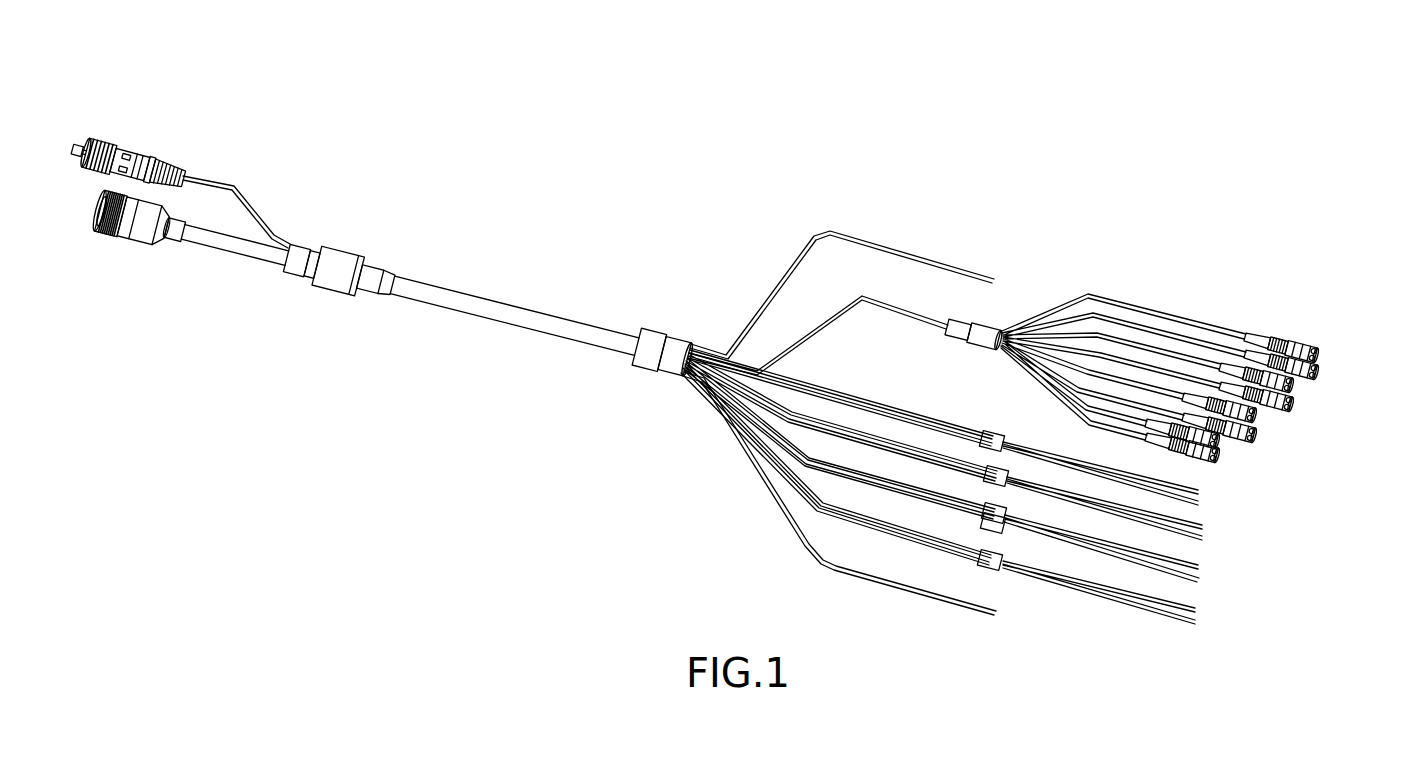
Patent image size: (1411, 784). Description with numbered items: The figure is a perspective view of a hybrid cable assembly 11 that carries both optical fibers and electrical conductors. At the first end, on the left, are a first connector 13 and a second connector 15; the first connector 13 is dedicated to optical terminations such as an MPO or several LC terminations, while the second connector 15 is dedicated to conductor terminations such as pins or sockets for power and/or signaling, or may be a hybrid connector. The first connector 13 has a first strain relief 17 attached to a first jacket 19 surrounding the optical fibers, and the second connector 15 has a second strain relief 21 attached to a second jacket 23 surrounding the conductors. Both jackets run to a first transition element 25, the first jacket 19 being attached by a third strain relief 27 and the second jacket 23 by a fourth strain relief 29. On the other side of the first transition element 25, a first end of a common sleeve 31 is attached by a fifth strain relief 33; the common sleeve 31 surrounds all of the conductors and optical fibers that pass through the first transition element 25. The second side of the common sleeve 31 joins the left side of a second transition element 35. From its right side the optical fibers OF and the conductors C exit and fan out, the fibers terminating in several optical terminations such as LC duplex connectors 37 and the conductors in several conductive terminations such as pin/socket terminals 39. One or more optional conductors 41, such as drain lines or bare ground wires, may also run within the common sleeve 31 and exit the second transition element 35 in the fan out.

The hybrid cable assembly 11 is at (572, 157).
The first connector 13 is at (139, 124).
The second connector 15 is at (124, 262).
The first strain relief 17 is at (168, 165).
The first jacket 19 is at (257, 210).
The second strain relief 21 is at (170, 232).
The second jacket 23 is at (232, 245).
The first transition element 25 is at (360, 225).
The third strain relief 27 is at (298, 242).
The fourth strain relief 29 is at (293, 262).
The common sleeve 31 is at (478, 312).
The fifth strain relief 33 is at (382, 285).
The second transition element 35 is at (662, 322).
The LC duplex connectors 37 is at (1330, 345).
The pin/socket terminals 39 is at (997, 432).
The optional conductors 41 is at (862, 243).
The optical fibers OF is at (893, 315).
The conductors C is at (940, 420).